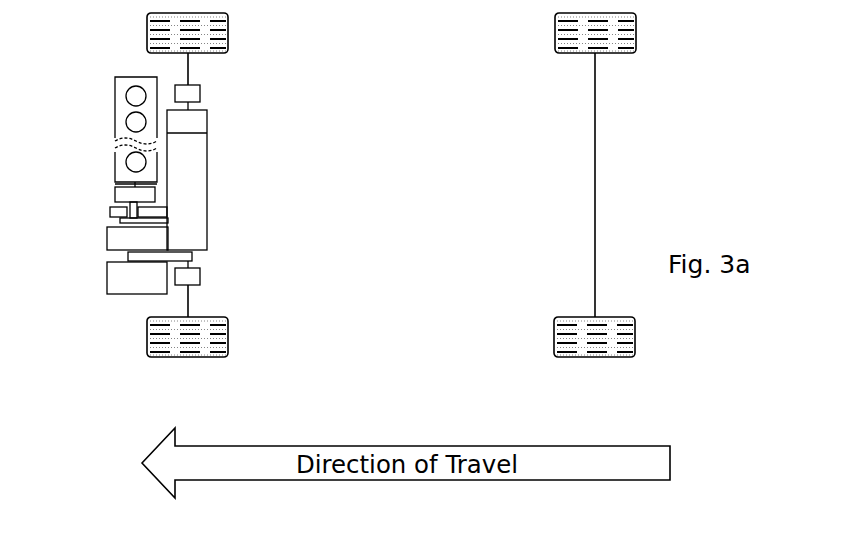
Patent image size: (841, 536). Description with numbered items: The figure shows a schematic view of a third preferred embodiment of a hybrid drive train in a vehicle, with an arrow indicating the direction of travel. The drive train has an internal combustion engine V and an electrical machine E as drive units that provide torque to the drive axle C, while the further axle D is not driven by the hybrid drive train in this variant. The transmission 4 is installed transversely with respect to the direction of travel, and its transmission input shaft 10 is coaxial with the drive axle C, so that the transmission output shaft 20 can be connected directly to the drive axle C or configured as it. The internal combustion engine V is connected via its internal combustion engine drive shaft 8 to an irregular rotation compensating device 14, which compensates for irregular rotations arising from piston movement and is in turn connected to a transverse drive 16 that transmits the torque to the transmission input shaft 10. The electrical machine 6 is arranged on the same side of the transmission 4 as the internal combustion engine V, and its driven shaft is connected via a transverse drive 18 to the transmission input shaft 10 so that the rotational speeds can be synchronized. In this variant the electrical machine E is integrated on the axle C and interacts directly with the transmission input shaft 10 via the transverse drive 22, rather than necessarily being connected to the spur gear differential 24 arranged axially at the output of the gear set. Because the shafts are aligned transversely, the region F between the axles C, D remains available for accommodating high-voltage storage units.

The transmission 4 is at (187, 180).
The electrical machine 6 is at (152, 233).
The internal combustion engine drive shaft 8 is at (122, 184).
The transmission input shaft 10 is at (200, 262).
The irregular rotation compensating device 14 is at (118, 196).
The transverse drive 16 is at (112, 215).
The transverse drive 18 is at (168, 221).
The transmission output shaft 20 is at (205, 110).
The transverse drive 22 is at (108, 248).
The spur gear differential 24 is at (196, 125).
The internal combustion engine V is at (118, 92).
The drive axle C is at (190, 66).
The further axle D is at (595, 116).
The electrical machine E is at (108, 279).
The region F is at (400, 193).